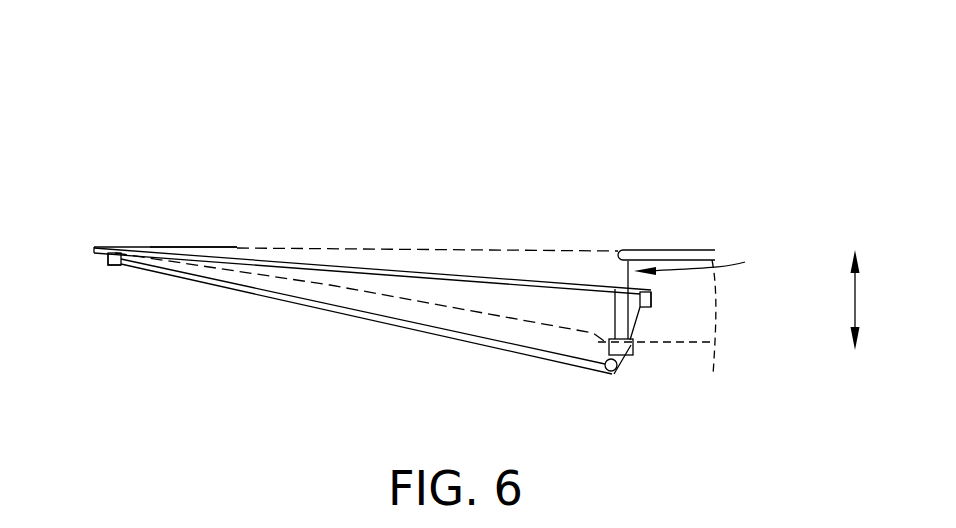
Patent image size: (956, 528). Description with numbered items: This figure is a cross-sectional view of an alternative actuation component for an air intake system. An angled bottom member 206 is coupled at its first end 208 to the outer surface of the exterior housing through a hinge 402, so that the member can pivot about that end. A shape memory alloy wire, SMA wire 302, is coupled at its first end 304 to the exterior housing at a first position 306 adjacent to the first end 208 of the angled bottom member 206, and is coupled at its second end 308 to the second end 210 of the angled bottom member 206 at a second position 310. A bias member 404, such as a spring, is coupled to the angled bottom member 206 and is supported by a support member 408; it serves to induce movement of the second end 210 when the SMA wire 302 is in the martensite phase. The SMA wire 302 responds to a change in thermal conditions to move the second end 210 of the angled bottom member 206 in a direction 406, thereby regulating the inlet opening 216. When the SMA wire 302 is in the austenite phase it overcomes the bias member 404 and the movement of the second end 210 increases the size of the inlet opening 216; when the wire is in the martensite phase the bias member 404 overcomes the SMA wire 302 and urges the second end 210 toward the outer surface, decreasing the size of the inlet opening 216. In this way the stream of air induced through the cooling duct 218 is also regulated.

The angled bottom member 206 is at (372, 266).
The first end of angled bottom member 208 is at (127, 247).
The second end of angled bottom member 210 is at (652, 290).
The inlet opening 216 is at (717, 263).
The cooling duct 218 is at (684, 334).
The SMA wire 302 is at (402, 326).
The first end of SMA wire 304 is at (122, 266).
The first position 306 is at (110, 266).
The second end of SMA wire 308 is at (632, 320).
The second position 310 is at (652, 302).
The hinge 402 is at (157, 247).
The bias member 404 is at (613, 312).
The direction 406 is at (858, 298).
The support member 408 is at (608, 354).